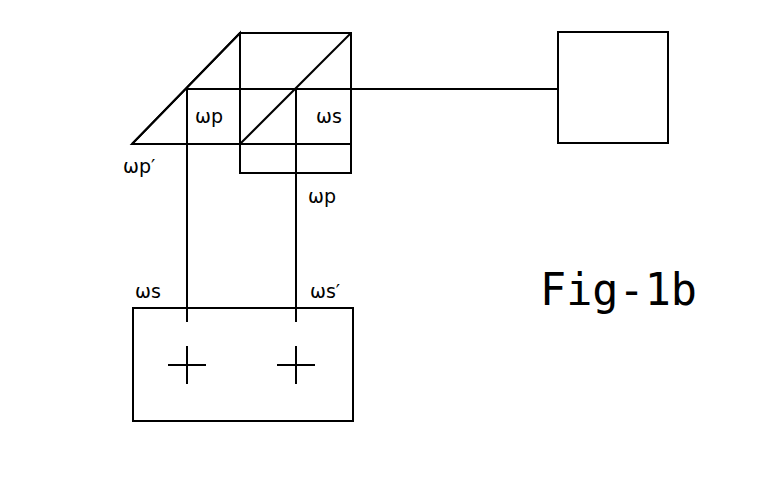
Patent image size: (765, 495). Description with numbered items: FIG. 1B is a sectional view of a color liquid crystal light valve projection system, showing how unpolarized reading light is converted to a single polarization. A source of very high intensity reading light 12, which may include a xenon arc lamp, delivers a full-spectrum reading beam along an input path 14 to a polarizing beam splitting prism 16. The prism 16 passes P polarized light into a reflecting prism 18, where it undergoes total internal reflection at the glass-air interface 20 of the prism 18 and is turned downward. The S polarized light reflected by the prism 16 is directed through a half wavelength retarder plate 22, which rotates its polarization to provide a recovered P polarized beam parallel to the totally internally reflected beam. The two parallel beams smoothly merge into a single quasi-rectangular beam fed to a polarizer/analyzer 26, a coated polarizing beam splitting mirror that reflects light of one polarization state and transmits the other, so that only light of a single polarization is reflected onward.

The source of reading light 12 is at (598, 143).
The input path 14 is at (425, 90).
The polarizing beam splitting prism 16 is at (328, 75).
The reflecting prism 18 is at (172, 128).
The glass-air interface 20 is at (215, 65).
The half wavelength retarder plate 22 is at (352, 160).
The polarizer/analyzer 26 is at (133, 382).